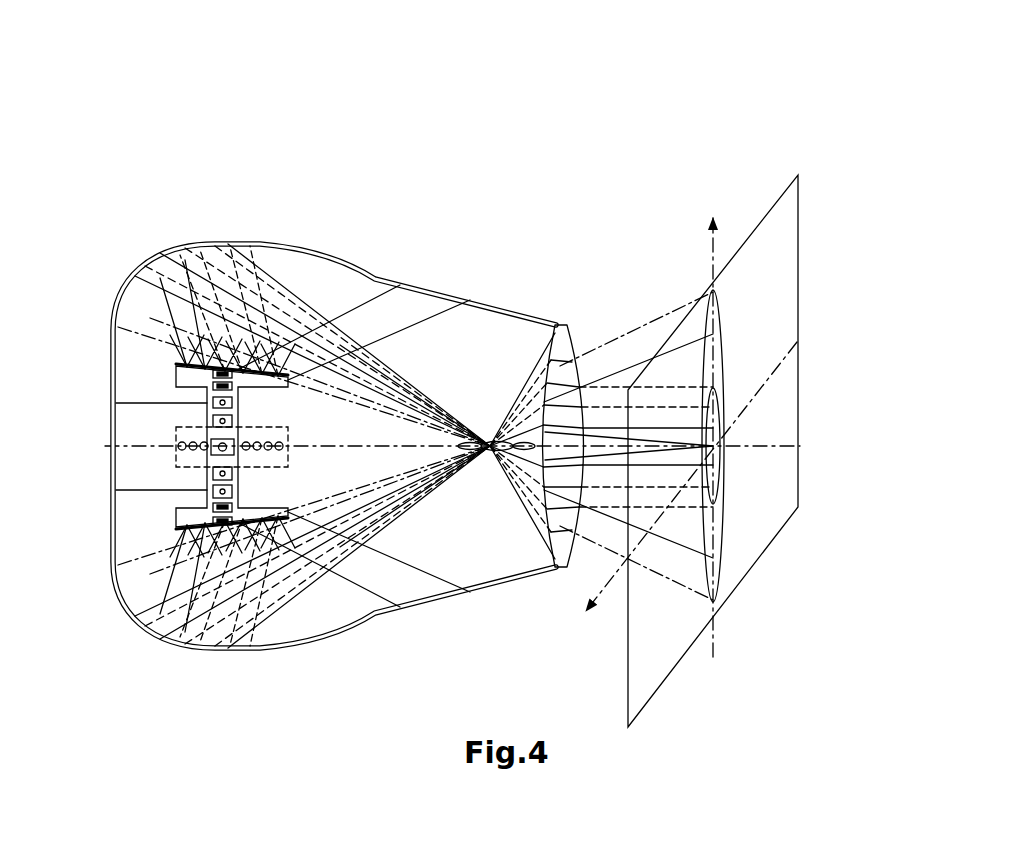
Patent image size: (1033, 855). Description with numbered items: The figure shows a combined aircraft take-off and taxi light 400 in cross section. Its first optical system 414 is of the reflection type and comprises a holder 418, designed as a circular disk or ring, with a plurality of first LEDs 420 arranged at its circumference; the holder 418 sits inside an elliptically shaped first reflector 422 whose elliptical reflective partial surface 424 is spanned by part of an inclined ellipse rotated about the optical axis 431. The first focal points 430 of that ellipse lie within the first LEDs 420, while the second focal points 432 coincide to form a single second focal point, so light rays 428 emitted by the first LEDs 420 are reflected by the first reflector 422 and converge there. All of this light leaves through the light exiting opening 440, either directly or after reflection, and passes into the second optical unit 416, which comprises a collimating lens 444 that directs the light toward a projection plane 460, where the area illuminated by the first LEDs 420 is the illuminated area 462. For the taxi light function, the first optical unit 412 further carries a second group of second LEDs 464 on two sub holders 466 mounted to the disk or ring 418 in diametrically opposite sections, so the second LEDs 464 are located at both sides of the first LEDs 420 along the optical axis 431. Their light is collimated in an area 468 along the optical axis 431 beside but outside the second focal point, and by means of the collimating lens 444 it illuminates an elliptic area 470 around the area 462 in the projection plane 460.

The combined take-off and taxi light 400 is at (510, 164).
The first optical unit 412 is at (400, 282).
The first optical system 414 is at (313, 220).
The second optical unit 416 is at (589, 283).
The holder 418 is at (207, 473).
The first LEDs 420 is at (190, 429).
The first reflector 422 is at (214, 247).
The elliptical reflective partial surface 424 is at (153, 331).
The light rays 428 is at (330, 385).
The first focal point 430 is at (170, 250).
The optical axis 431 is at (390, 497).
The second focal point 432 is at (489, 440).
The light exiting opening 440 is at (545, 334).
The collimating lens 444 is at (570, 362).
The projection plane 460 is at (762, 340).
The illuminated area 462 is at (727, 482).
The second LEDs 464 is at (183, 342).
The sub holders 466 is at (257, 520).
The collimated area 468 is at (527, 447).
The elliptic area 470 is at (720, 320).